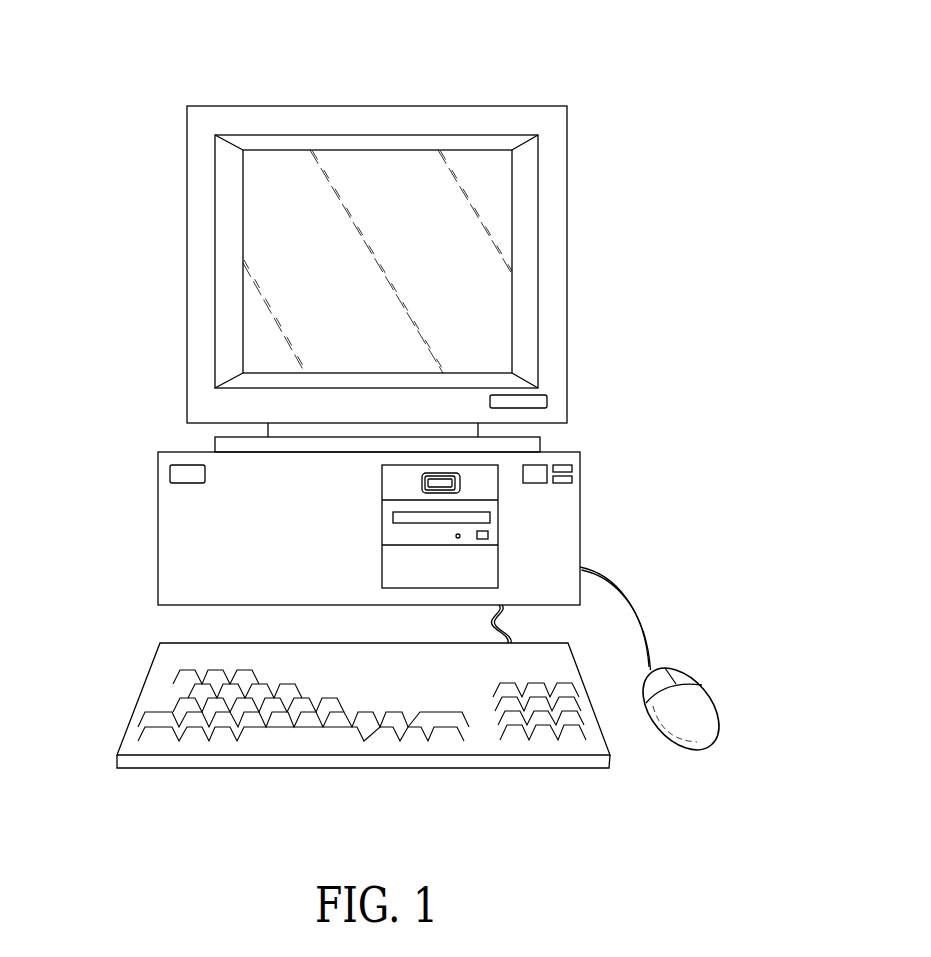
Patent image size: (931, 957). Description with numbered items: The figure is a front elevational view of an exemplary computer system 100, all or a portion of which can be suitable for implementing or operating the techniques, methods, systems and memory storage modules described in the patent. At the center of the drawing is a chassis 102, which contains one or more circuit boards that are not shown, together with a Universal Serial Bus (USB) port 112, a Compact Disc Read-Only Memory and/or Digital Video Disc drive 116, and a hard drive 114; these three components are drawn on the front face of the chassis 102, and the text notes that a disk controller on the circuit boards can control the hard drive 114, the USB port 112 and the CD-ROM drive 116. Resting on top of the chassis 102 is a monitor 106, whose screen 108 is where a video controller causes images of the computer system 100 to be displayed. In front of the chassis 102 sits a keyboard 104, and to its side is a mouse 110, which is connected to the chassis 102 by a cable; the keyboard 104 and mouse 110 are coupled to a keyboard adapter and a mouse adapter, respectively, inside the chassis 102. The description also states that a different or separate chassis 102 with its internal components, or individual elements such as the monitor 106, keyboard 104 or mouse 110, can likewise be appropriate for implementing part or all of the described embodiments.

The computer system 100 is at (560, 80).
The chassis 102 is at (158, 532).
The keyboard 104 is at (138, 697).
The monitor 106 is at (262, 106).
The screen 108 is at (290, 265).
The mouse 110 is at (700, 698).
The Universal Serial Bus (USB) port 112 is at (460, 479).
The hard drive 114 is at (492, 566).
The CD-ROM and/or DVD drive 116 is at (492, 523).